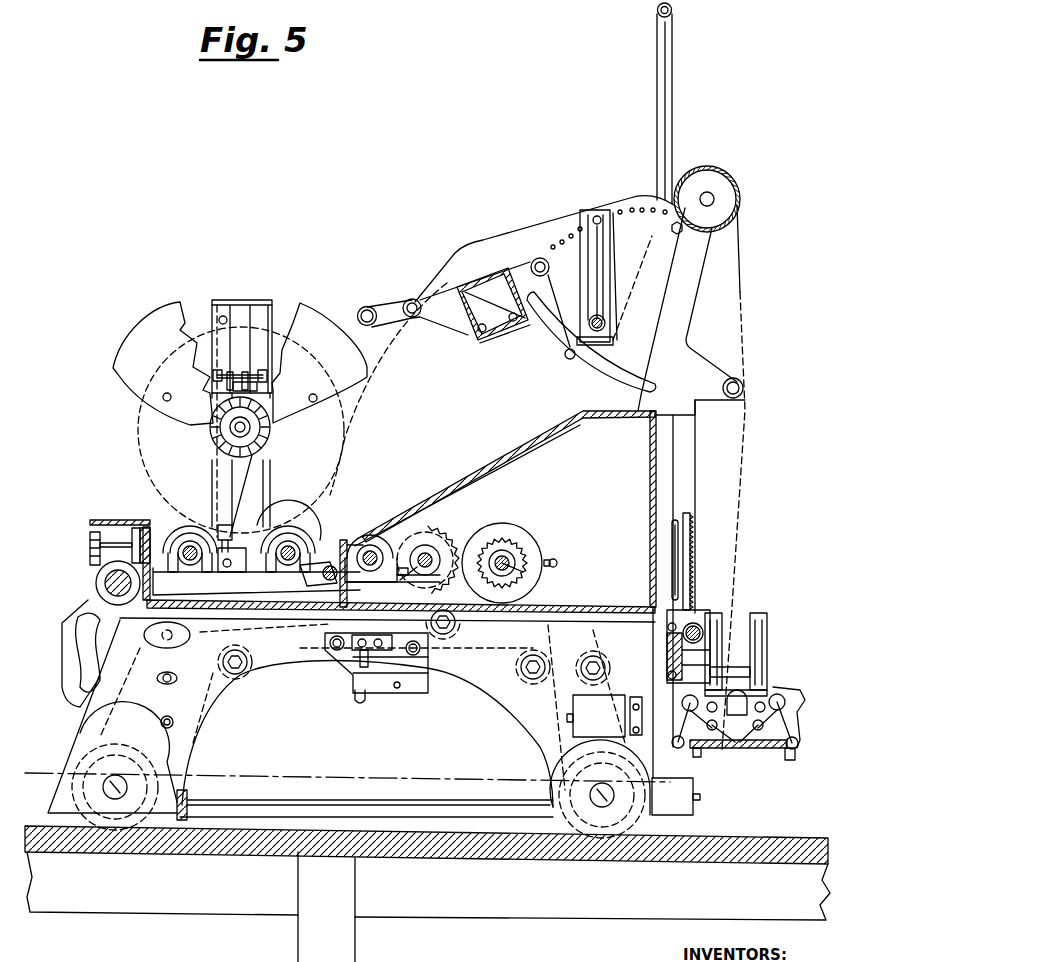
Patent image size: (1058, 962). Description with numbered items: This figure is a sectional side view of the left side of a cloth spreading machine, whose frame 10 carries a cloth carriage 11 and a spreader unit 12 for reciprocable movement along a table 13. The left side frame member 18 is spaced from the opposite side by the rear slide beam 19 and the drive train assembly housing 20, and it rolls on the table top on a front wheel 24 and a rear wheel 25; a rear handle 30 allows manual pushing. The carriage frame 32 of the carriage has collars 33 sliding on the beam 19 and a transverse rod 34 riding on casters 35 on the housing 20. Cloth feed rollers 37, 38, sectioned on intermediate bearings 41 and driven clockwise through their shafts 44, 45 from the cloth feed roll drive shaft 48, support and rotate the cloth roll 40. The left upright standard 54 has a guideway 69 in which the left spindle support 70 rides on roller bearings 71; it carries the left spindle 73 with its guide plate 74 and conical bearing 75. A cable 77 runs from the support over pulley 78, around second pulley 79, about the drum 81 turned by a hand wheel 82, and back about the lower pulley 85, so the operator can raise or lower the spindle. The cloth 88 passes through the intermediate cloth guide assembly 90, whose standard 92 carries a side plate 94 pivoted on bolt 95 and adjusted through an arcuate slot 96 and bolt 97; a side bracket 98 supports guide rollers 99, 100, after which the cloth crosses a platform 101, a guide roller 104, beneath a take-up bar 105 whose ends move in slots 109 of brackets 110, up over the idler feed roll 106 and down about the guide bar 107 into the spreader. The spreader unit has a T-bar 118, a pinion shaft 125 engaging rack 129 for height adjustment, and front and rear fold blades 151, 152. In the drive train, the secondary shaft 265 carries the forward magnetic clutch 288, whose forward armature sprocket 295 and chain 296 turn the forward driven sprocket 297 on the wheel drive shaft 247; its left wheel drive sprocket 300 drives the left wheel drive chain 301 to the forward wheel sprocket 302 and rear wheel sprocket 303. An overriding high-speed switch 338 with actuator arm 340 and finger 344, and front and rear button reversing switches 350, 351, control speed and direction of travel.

The frame 10 is at (506, 437).
The cloth carriage 11 is at (358, 538).
The spreader unit 12 is at (794, 670).
The table 13 is at (740, 860).
The left side frame member 18 is at (205, 735).
The rear slide beam 19 is at (105, 584).
The drive train assembly housing 20 is at (388, 594).
The front wheel 24 is at (605, 840).
The rear wheel 25 is at (115, 842).
The rear handle 30 is at (65, 648).
The carriage frame 32 is at (165, 622).
The collar 33 is at (98, 577).
The transverse rod 34 is at (368, 545).
The roller or caster 35 is at (300, 645).
The cloth feed roller 37 is at (303, 560).
The cloth feed roller 38 is at (180, 535).
The cloth roll 40 is at (138, 437).
The intermediate bearing 41 is at (290, 540).
The cloth feed roller shaft 44 is at (287, 566).
The cloth feed roller shaft 45 is at (205, 565).
The cloth feed roll drive shaft 48 is at (395, 545).
The left upright standard 54 is at (268, 317).
The vertical slot or guideway 69 is at (248, 472).
The left spindle support 70 is at (255, 392).
The roller bearings 71 is at (213, 375).
The left spindle 73 is at (252, 431).
The guide plate 74 is at (240, 363).
The conical bearing 75 is at (218, 442).
The cable 77 is at (240, 325).
The pulley 78 is at (230, 320).
The second pulley 79 is at (222, 524).
The drum 81 is at (118, 528).
The hand wheel 82 is at (90, 533).
The lower pulley 85 is at (232, 568).
The cloth 88 is at (372, 410).
The intermediate cloth guide assembly 90 is at (497, 221).
The standard 92 is at (700, 476).
The side plate 94 is at (609, 263).
The bolt 95 is at (674, 235).
The arcuate slot 96 is at (582, 378).
The bolt 97 is at (565, 356).
The side bracket 98 is at (392, 318).
The cloth guide roller 99 is at (412, 299).
The cloth guide roller 100 is at (366, 305).
The platform 101 is at (473, 285).
The guide roller 104 is at (545, 258).
The cloth take-up bar 105 is at (608, 330).
The idler feed roll 106 is at (728, 182).
The guide bar or roller 107 is at (733, 378).
The slot 109 is at (603, 255).
The elongated bracket 110 is at (585, 210).
The T-bar 118 is at (667, 651).
The pinion shaft 125 is at (702, 614).
The rack 129 is at (690, 552).
The front fold blade 151 is at (745, 757).
The rear fold blade 152 is at (700, 760).
The wheel drive shaft 247 is at (420, 572).
The secondary shaft 265 is at (525, 575).
The forward magnetic clutch 288 is at (558, 561).
The forward armature sprocket 295 is at (530, 548).
The chain 296 is at (512, 540).
The forward driven sprocket 297 is at (455, 562).
The left wheel drive sprocket 300 is at (440, 540).
The left wheel drive chain 301 is at (555, 617).
The forward wheel sprocket 302 is at (572, 842).
The rear wheel sprocket 303 is at (72, 797).
The overriding high-speed switch 338 is at (358, 657).
The actuator arm 340 is at (398, 692).
The finger 344 is at (358, 702).
The button reversing switch 350 is at (676, 796).
The rear button reversing switch 351 is at (604, 716).